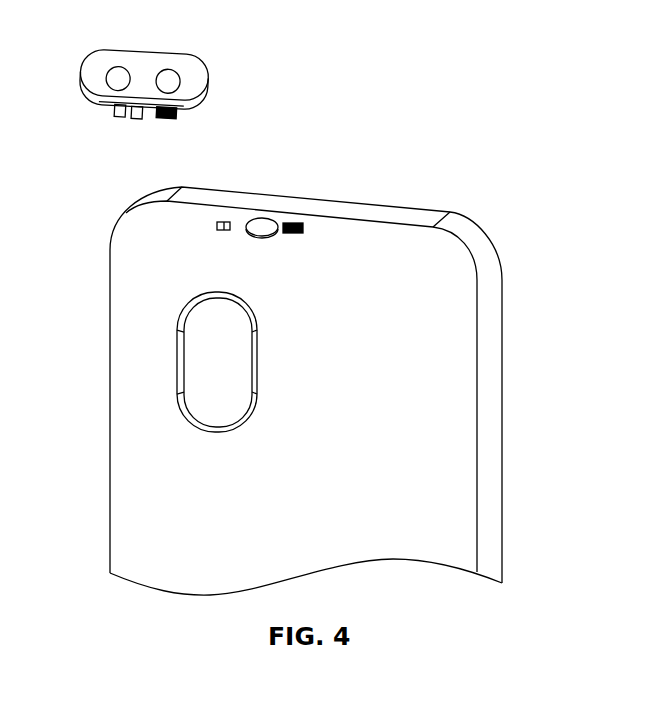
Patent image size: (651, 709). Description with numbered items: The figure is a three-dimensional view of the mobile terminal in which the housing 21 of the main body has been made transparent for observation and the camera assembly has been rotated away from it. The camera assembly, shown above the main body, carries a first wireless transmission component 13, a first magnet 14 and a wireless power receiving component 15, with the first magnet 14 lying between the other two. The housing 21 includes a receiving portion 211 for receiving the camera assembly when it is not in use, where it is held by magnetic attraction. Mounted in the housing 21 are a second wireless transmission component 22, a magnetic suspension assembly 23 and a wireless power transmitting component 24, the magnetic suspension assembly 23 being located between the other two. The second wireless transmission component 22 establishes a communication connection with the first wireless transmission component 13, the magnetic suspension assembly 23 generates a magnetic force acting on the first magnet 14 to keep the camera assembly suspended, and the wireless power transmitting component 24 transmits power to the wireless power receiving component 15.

The first wireless transmission component 13 is at (121, 106).
The first magnet 14 is at (143, 110).
The wireless power receiving component 15 is at (170, 110).
The housing 21 is at (483, 412).
The receiving portion 211 is at (203, 363).
The second wireless transmission component 22 is at (227, 222).
The magnetic suspension assembly 23 is at (262, 222).
The wireless power transmitting component 24 is at (297, 223).